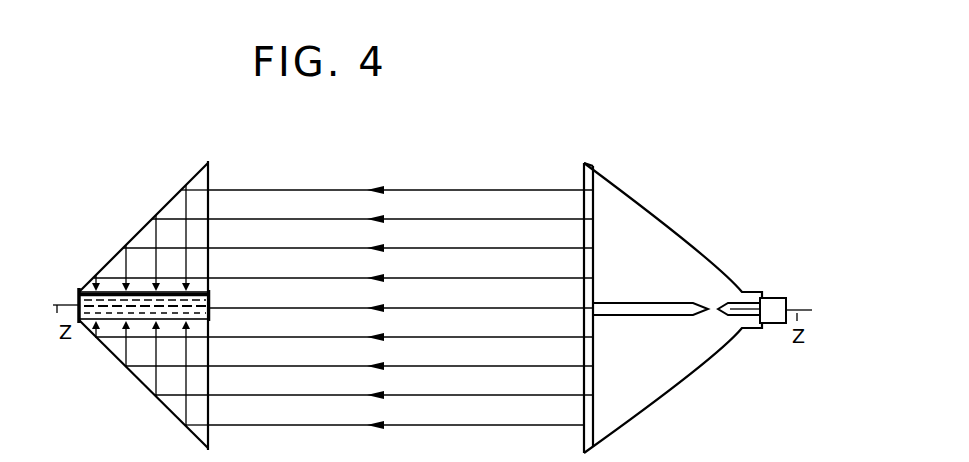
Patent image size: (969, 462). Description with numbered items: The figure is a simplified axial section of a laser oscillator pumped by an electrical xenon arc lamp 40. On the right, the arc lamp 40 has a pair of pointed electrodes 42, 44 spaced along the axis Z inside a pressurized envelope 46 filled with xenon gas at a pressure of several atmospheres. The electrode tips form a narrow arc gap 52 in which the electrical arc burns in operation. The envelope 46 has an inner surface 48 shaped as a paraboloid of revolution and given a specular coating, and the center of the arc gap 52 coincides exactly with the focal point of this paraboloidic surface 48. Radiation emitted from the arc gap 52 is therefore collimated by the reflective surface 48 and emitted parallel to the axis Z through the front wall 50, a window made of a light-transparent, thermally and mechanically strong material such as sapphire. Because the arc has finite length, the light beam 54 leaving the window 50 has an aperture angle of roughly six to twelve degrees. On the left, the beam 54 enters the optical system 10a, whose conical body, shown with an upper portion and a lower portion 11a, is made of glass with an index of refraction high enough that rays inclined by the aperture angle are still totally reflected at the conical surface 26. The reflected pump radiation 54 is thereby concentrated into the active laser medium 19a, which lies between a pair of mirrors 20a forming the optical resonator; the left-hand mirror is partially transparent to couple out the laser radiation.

The system 10a is at (196, 177).
The lower prism section 11a is at (165, 399).
The conical surface 26 is at (172, 203).
The mirrors 20a is at (79, 291).
The active laser medium 19a is at (84, 322).
The light beam 54 is at (448, 180).
The arc lamp 40 is at (661, 312).
The electrode 42 is at (628, 311).
The electrode 44 is at (730, 316).
The pressurized envelope 46 is at (724, 359).
The inner surface 48 is at (617, 429).
The front wall 50 is at (583, 437).
The arc gap 52 is at (713, 304).